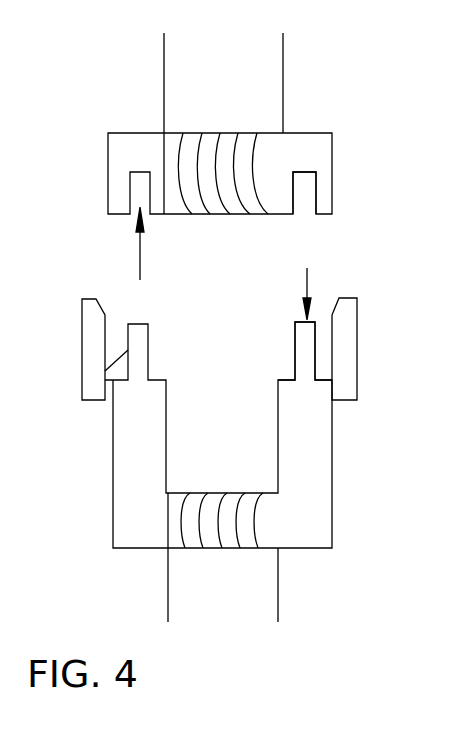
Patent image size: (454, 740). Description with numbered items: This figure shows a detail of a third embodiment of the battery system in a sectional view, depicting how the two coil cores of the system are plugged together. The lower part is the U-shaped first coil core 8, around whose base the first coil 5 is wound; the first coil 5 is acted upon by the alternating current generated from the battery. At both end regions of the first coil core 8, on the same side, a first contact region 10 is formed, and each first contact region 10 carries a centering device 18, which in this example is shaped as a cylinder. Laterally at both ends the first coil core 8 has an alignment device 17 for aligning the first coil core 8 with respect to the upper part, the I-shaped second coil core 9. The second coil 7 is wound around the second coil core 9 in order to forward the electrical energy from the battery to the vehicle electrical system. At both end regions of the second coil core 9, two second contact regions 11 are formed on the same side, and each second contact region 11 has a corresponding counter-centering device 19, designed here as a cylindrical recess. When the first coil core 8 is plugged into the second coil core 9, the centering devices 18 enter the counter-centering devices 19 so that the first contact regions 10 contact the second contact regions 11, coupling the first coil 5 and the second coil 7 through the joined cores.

The first coil 5 is at (217, 527).
The second coil 7 is at (200, 143).
The first coil core 8 is at (307, 475).
The second coil core 9 is at (315, 148).
The first contact region 10 is at (309, 280).
The second contact region 11 is at (143, 259).
The alignment device 17 is at (348, 337).
The centering device 18 is at (303, 359).
The counter-centering device 19 is at (305, 192).